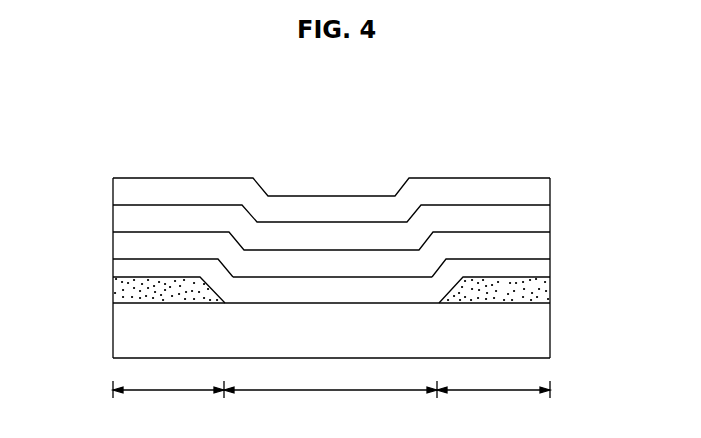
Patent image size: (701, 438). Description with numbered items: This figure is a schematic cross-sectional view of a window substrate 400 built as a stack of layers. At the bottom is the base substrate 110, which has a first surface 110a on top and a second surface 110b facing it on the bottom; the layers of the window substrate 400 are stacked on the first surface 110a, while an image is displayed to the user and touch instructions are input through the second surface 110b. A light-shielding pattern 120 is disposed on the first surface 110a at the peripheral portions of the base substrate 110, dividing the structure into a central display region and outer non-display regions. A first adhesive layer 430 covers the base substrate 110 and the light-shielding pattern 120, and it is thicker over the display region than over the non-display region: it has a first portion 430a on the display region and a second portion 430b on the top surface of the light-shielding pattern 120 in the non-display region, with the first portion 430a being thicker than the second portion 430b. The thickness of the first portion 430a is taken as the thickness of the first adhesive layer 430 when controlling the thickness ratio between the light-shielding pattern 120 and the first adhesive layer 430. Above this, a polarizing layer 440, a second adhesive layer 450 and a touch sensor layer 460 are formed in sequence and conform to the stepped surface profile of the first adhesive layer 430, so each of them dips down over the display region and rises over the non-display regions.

The window substrate 400 is at (158, 113).
The touch sensor layer 460 is at (122, 197).
The second adhesive layer 450 is at (122, 222).
The polarizing layer 440 is at (122, 248).
The first adhesive layer 430 is at (125, 272).
The first portion 430a is at (323, 291).
The second portion 430b is at (525, 270).
The light-shielding pattern 120 is at (122, 289).
The base substrate 110 is at (125, 327).
The first surface 110a is at (522, 306).
The second surface 110b is at (522, 360).